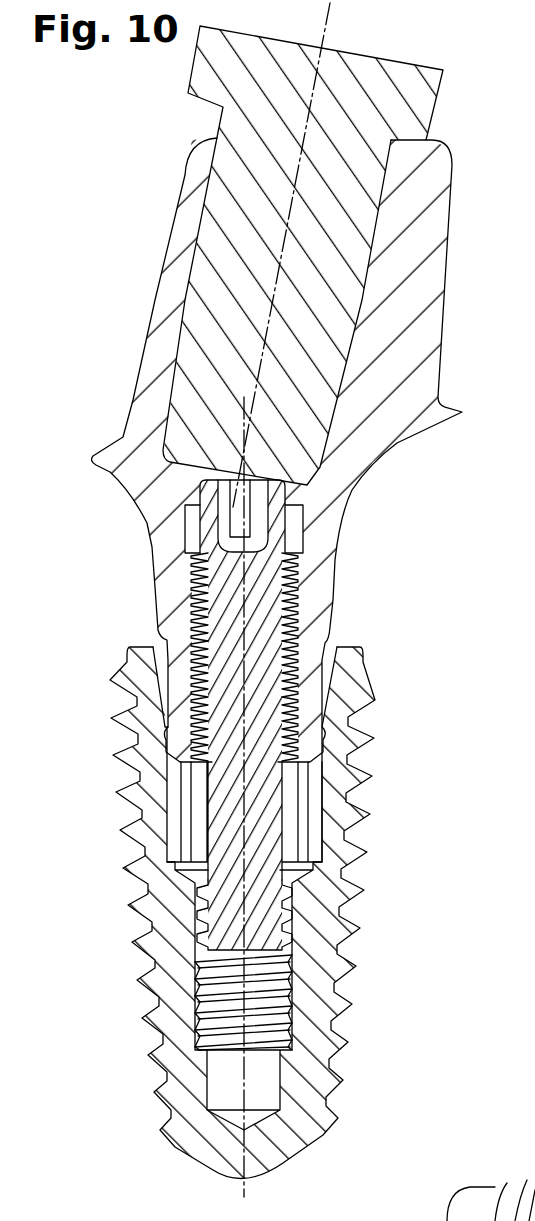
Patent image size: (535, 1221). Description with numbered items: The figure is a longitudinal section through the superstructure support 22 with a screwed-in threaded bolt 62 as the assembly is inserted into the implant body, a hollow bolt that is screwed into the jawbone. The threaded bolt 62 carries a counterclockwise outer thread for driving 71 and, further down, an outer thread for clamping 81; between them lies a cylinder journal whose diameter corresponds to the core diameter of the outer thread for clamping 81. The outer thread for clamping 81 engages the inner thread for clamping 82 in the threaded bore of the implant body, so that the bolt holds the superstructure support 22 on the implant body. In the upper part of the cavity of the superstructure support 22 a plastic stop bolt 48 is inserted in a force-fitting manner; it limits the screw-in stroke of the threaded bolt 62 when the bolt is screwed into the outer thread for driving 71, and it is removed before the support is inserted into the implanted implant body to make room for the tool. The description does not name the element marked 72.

The superstructure support 22 is at (368, 437).
The stop bolt 48 is at (228, 258).
The threaded bolt 62 is at (283, 795).
The outer thread for driving 71 is at (305, 597).
The screw thread 72 is at (297, 697).
The outer thread for clamping 81 is at (290, 835).
The inner thread for clamping 82 is at (292, 998).